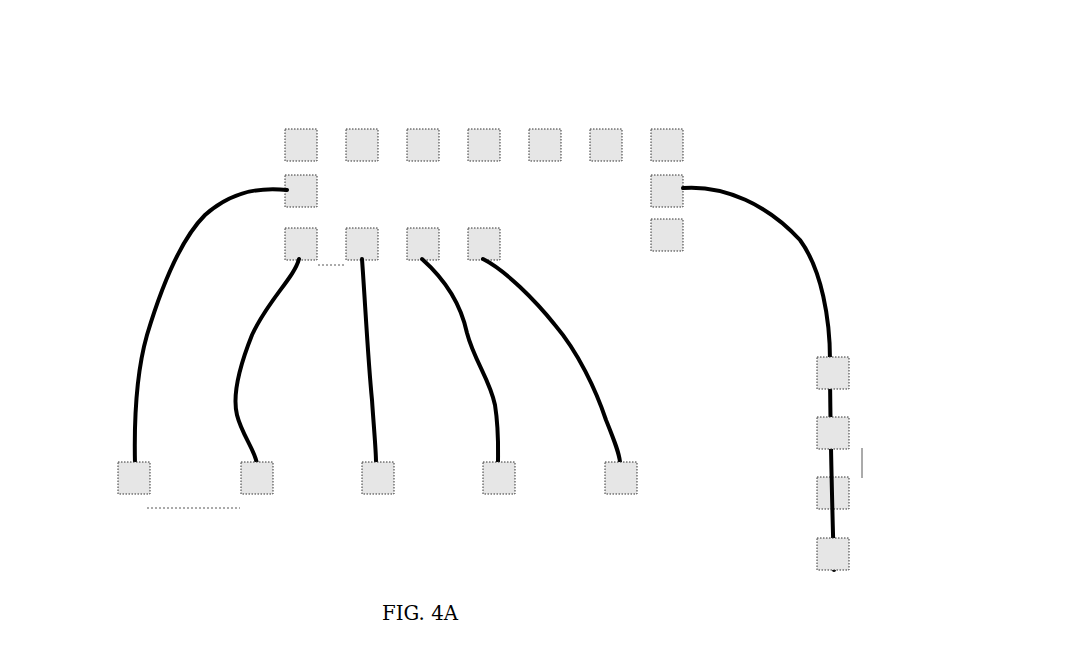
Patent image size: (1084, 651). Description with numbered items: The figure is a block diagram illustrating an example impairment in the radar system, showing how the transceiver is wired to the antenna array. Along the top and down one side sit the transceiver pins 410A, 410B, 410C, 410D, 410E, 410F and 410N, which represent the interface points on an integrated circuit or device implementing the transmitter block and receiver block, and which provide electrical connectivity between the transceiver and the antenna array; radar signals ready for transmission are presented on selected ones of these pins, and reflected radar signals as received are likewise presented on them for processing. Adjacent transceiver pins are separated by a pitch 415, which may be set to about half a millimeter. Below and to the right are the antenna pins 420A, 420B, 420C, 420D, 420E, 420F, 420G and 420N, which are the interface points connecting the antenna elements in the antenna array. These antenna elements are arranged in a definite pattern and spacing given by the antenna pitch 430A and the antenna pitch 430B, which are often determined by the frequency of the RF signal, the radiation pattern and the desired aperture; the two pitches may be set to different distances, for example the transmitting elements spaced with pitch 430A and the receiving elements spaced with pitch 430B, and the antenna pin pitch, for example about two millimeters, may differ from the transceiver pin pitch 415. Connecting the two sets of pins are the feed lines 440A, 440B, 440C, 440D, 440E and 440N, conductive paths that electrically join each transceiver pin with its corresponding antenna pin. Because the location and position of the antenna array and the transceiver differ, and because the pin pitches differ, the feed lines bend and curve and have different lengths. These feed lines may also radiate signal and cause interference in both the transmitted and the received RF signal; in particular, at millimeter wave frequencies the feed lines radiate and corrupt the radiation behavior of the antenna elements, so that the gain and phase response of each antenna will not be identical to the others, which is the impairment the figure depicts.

The transceiver pin 410A is at (488, 228).
The transceiver pin 410B is at (426, 228).
The transceiver pin 410C is at (365, 228).
The transceiver pin 410D is at (290, 250).
The transceiver pin 410E is at (290, 188).
The transceiver pin 410F is at (301, 129).
The transceiver pin 410N is at (668, 252).
The pitch of the transceiver pins 415 is at (326, 268).
The antenna pin 420A is at (130, 493).
The antenna pin 420B is at (253, 493).
The antenna pin 420C is at (380, 494).
The antenna pin 420D is at (497, 494).
The antenna pin 420E is at (620, 494).
The antenna pin 420F is at (817, 372).
The antenna pin 420G is at (817, 432).
The antenna pin 420N is at (817, 551).
The antenna pitch 430A is at (865, 462).
The antenna pitch 430B is at (192, 510).
The feed line 440A is at (135, 366).
The feed line 440B is at (237, 393).
The feed line 440C is at (371, 394).
The feed line 440D is at (488, 396).
The feed line 440E is at (600, 411).
The feed line 440N is at (800, 240).